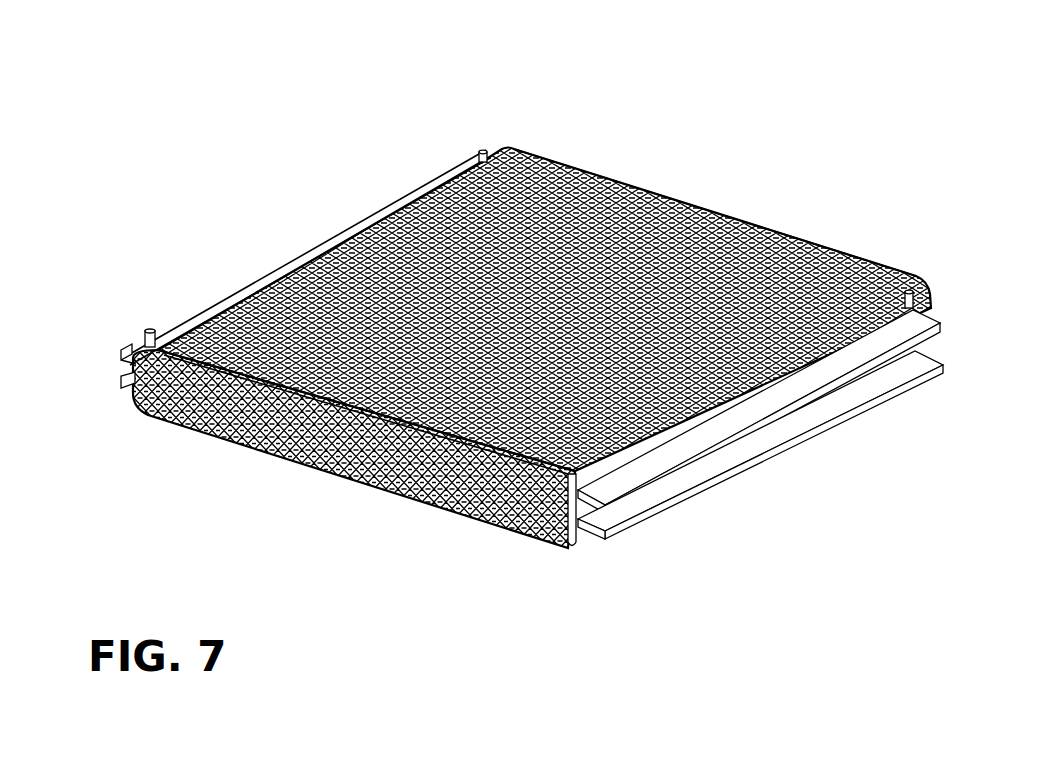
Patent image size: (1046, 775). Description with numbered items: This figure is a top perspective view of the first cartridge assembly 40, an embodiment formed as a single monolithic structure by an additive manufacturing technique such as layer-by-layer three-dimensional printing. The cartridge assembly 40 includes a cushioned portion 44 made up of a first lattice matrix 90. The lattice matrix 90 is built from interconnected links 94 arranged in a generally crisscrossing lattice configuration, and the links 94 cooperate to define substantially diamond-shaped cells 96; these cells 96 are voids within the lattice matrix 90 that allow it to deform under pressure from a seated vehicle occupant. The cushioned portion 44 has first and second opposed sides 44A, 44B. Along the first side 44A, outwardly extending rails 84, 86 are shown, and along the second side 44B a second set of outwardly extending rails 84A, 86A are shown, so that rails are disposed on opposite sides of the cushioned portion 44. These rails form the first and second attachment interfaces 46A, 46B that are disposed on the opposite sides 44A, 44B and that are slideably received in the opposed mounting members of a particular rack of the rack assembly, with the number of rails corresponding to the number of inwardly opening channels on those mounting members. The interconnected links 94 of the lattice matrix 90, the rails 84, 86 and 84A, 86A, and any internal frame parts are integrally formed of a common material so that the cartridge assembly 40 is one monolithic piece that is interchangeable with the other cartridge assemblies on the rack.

The first cartridge assembly 40 is at (507, 297).
The cushioned portion 44 is at (507, 343).
The first side 44A is at (328, 232).
The second side 44B is at (822, 304).
The first attachment interface 46A is at (133, 299).
The second attachment interface 46B is at (771, 442).
The outwardly extending rail 84 is at (163, 322).
The outwardly extending rail 86 is at (126, 368).
The outwardly extending rail 84A is at (845, 368).
The outwardly extending rail 86A is at (822, 408).
The first lattice matrix 90 is at (532, 312).
The interconnected links 94 is at (354, 449).
The cells 96 is at (332, 468).